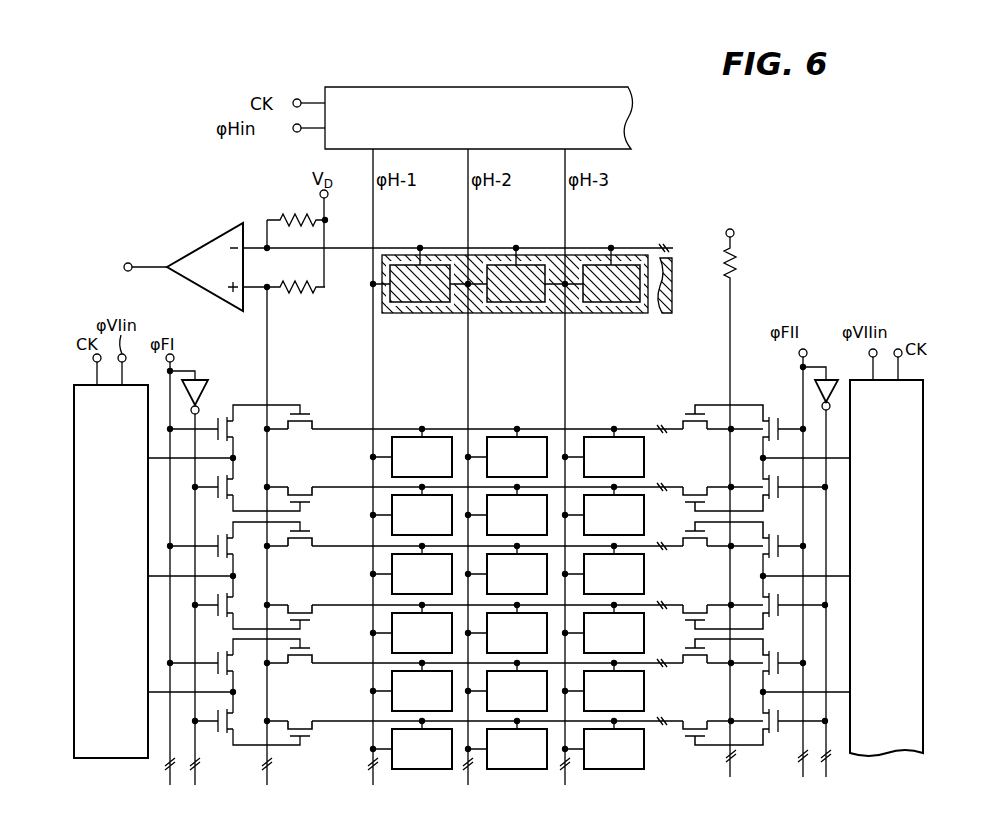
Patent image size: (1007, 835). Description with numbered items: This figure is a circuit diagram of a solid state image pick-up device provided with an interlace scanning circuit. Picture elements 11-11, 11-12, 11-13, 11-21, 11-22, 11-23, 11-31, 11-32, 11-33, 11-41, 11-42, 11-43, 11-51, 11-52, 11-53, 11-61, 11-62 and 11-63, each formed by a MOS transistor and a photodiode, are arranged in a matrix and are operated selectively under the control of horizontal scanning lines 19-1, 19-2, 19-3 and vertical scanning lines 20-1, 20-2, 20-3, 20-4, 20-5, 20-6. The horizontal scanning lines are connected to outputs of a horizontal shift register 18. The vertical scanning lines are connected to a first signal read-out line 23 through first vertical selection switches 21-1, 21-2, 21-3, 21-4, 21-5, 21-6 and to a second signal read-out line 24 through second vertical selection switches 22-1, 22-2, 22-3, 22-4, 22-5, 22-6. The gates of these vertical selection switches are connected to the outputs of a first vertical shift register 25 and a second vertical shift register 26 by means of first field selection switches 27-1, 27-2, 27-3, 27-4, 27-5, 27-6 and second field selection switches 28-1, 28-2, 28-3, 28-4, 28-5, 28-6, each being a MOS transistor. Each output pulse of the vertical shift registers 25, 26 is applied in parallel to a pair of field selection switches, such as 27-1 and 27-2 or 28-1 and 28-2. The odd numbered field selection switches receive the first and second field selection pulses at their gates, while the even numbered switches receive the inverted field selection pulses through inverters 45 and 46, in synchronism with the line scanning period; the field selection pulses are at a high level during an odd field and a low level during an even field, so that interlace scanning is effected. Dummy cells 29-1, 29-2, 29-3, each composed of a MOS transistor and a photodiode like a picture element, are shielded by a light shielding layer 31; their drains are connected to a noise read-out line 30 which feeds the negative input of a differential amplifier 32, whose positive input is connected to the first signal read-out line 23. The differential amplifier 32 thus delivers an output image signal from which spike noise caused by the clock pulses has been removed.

The picture element 11-11 is at (412, 453).
The picture element 11-12 is at (507, 453).
The picture element 11-13 is at (604, 453).
The picture element 11-21 is at (412, 511).
The picture element 11-22 is at (507, 511).
The picture element 11-23 is at (604, 511).
The picture element 11-31 is at (412, 570).
The picture element 11-32 is at (507, 570).
The picture element 11-33 is at (604, 570).
The picture element 11-41 is at (412, 629).
The picture element 11-42 is at (507, 629).
The picture element 11-43 is at (604, 629).
The picture element 11-51 is at (412, 687).
The picture element 11-52 is at (507, 687).
The picture element 11-53 is at (604, 687).
The picture element 11-61 is at (412, 745).
The picture element 11-62 is at (507, 745).
The picture element 11-63 is at (604, 745).
The horizontal shift register 18 is at (640, 118).
The horizontal scanning line 19-1 is at (374, 378).
The horizontal scanning line 19-2 is at (469, 378).
The horizontal scanning line 19-3 is at (566, 378).
The vertical scanning line 20-1 is at (608, 428).
The vertical scanning line 20-2 is at (645, 484).
The vertical scanning line 20-3 is at (645, 545).
The vertical scanning line 20-4 is at (646, 604).
The vertical scanning line 20-5 is at (650, 661).
The vertical scanning line 20-6 is at (648, 720).
The first vertical selection switch 21-1 is at (305, 411).
The first vertical selection switch 21-2 is at (303, 500).
The first vertical selection switch 21-3 is at (300, 540).
The first vertical selection switch 21-4 is at (303, 618).
The first vertical selection switch 21-5 is at (298, 657).
The first vertical selection switch 21-6 is at (303, 738).
The second vertical selection switch 22-1 is at (690, 411).
The second vertical selection switch 22-2 is at (690, 497).
The second vertical selection switch 22-3 is at (692, 533).
The second vertical selection switch 22-4 is at (700, 619).
The second vertical selection switch 22-5 is at (692, 656).
The second vertical selection switch 22-6 is at (690, 736).
The first signal read-out line 23 is at (270, 322).
The second signal read-out line 24 is at (733, 296).
The first vertical shift register 25 is at (74, 435).
The second vertical shift register 26 is at (923, 432).
The first field selection switch 27-1 is at (233, 425).
The first field selection switch 27-2 is at (235, 495).
The first field selection switch 27-3 is at (237, 548).
The first field selection switch 27-4 is at (240, 622).
The first field selection switch 27-5 is at (230, 665).
The first field selection switch 27-6 is at (222, 735).
The second field selection switch 28-1 is at (768, 422).
The second field selection switch 28-2 is at (768, 486).
The second field selection switch 28-3 is at (770, 547).
The second field selection switch 28-4 is at (768, 605).
The second field selection switch 28-5 is at (770, 670).
The second field selection switch 28-6 is at (768, 738).
The dummy cell 29-1 is at (428, 302).
The dummy cell 29-2 is at (516, 302).
The dummy cell 29-3 is at (611, 302).
The noise read-out line 30 is at (405, 254).
The light shielding layer 31 is at (637, 254).
The differential amplifier 32 is at (225, 245).
The inverter 45 is at (200, 380).
The inverter 46 is at (818, 378).